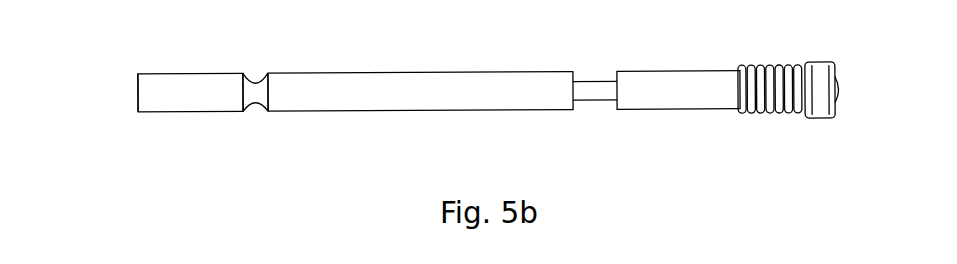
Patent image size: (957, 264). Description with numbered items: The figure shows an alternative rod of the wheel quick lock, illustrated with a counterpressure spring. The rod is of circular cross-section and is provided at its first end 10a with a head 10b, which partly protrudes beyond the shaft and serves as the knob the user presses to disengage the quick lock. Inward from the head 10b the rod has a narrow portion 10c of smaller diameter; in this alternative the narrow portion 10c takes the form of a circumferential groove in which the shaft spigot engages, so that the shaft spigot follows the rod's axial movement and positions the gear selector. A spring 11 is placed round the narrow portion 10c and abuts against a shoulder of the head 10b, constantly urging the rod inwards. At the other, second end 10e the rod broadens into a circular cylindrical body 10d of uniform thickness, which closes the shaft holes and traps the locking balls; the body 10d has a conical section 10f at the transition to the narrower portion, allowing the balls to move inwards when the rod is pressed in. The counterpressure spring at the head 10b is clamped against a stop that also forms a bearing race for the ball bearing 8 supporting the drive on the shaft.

The first end of the rod 10a is at (843, 87).
The head 10b is at (697, 108).
The narrow portion 10c is at (600, 100).
The circular cylindrical body 10d is at (192, 112).
The second end of the rod 10e is at (132, 103).
The conical section 10f is at (257, 78).
The spring 11 is at (780, 114).
The ball bearing 8 is at (820, 117).